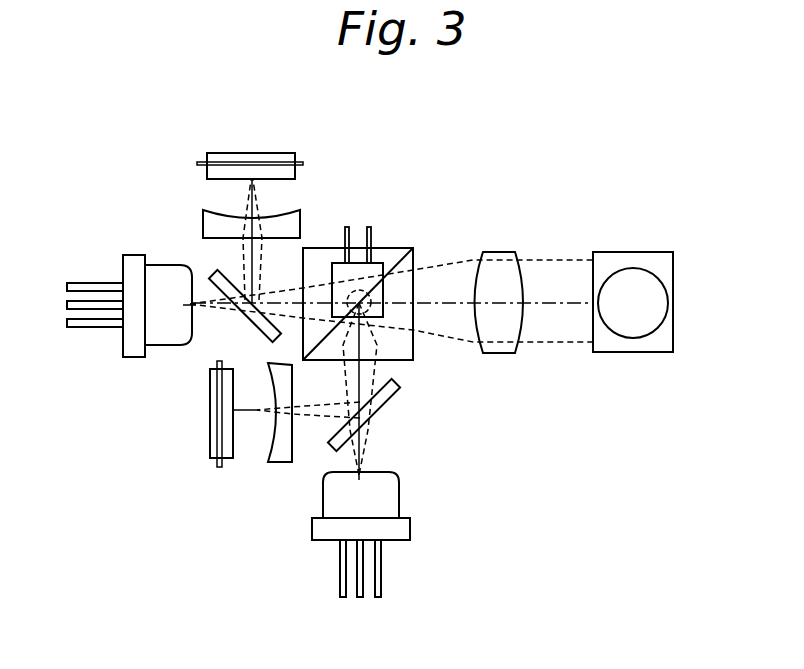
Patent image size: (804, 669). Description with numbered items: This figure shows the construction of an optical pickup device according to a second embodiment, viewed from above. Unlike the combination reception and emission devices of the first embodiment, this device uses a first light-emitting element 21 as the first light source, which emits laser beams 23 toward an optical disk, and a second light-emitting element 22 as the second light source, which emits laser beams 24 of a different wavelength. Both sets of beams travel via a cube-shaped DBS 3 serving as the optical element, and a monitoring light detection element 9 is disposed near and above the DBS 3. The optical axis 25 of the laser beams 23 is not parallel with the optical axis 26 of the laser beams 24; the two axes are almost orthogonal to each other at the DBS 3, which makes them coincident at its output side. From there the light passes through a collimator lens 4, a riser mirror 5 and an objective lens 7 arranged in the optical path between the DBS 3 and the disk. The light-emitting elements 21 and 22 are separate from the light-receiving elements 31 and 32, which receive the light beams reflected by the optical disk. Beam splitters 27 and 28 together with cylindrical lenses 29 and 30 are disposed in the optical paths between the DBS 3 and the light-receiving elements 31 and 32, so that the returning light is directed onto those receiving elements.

The DBS 3 is at (400, 248).
The collimator lens 4 is at (503, 252).
The riser mirror 5 is at (637, 252).
The objective lens 7 is at (650, 298).
The monitoring light detection element 9 is at (357, 263).
The first light-emitting element 21 is at (157, 345).
The second light-emitting element 22 is at (399, 493).
The laser beams 23 is at (313, 287).
The laser beams 24 is at (375, 372).
The optical axis 25 is at (278, 300).
The optical axis 26 is at (357, 390).
The beam splitter 27 is at (245, 324).
The beam splitter 28 is at (397, 397).
The cylindrical lens 29 is at (203, 220).
The cylindrical lens 30 is at (280, 462).
The light-receiving element 31 is at (238, 153).
The light-receiving element 32 is at (228, 462).